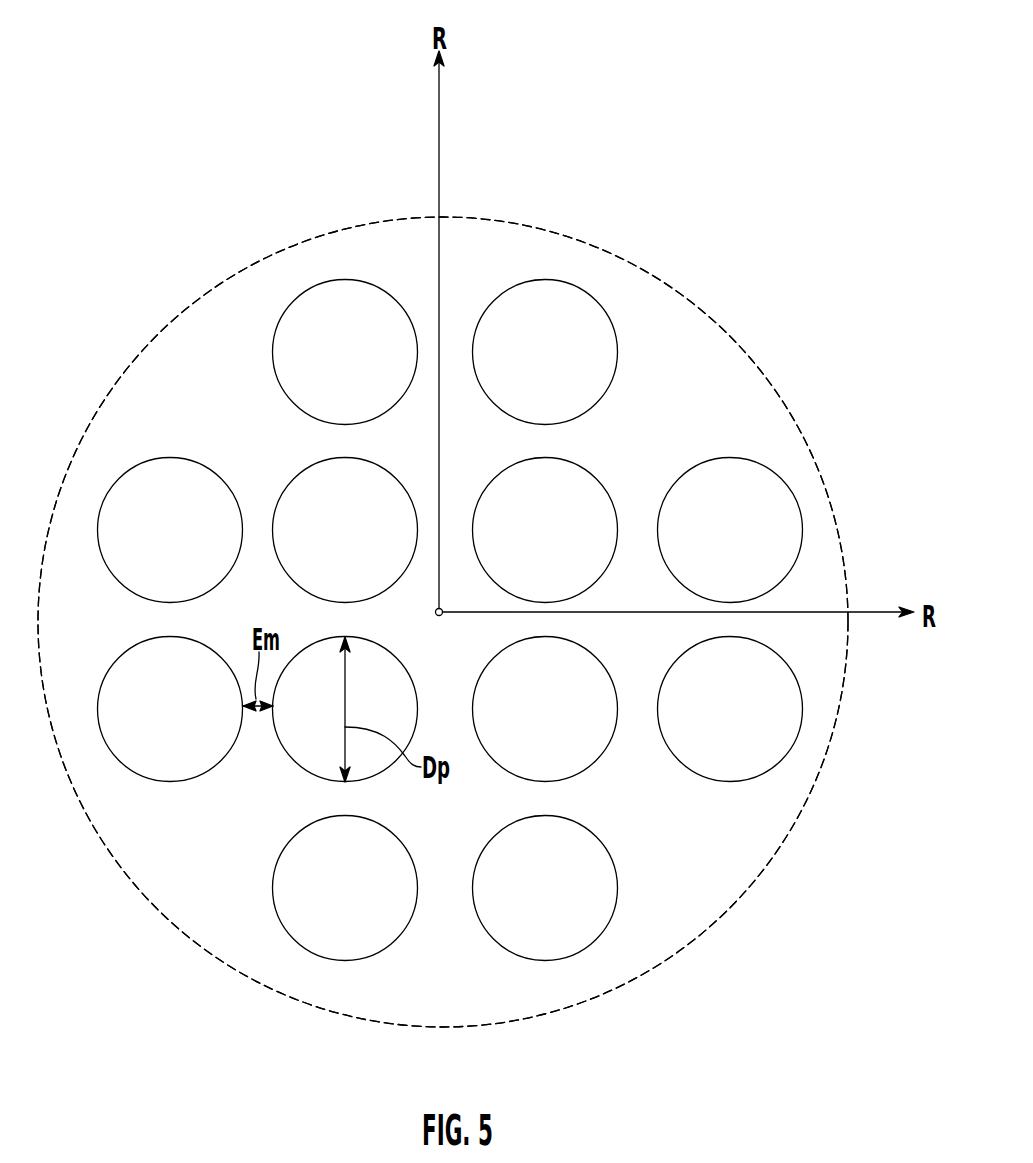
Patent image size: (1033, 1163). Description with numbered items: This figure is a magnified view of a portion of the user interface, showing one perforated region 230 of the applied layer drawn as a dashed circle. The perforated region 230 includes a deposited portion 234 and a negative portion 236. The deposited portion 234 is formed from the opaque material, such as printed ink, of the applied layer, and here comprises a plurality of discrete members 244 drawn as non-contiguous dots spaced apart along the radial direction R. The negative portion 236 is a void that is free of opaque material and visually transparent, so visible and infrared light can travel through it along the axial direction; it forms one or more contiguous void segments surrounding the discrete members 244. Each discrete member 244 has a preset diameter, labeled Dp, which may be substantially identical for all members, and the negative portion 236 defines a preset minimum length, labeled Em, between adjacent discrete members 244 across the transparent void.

The perforated region 230 is at (212, 958).
The deposited portion 234 is at (186, 748).
The negative portion 236 is at (713, 361).
The discrete members 244 is at (592, 763).